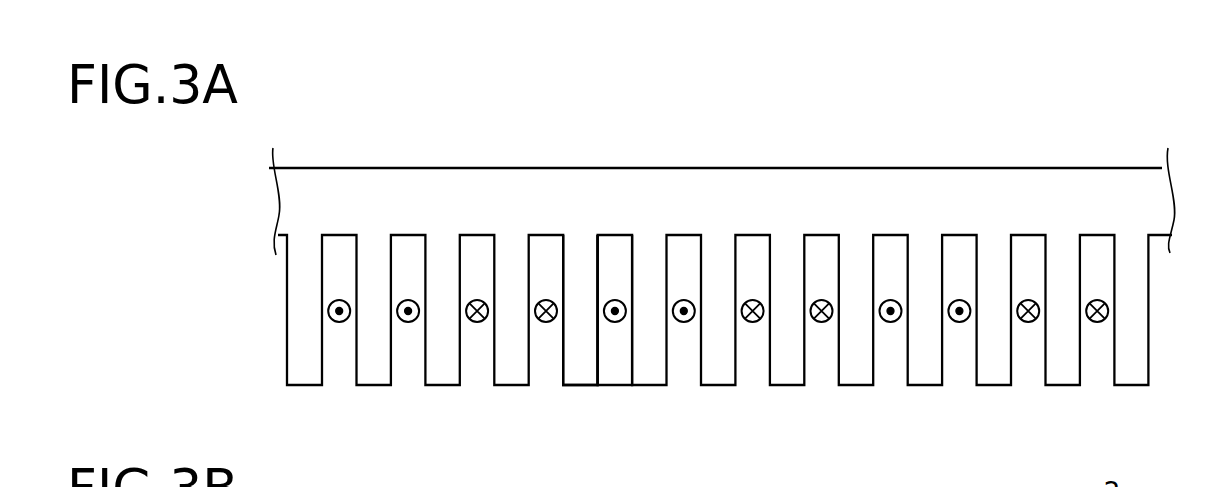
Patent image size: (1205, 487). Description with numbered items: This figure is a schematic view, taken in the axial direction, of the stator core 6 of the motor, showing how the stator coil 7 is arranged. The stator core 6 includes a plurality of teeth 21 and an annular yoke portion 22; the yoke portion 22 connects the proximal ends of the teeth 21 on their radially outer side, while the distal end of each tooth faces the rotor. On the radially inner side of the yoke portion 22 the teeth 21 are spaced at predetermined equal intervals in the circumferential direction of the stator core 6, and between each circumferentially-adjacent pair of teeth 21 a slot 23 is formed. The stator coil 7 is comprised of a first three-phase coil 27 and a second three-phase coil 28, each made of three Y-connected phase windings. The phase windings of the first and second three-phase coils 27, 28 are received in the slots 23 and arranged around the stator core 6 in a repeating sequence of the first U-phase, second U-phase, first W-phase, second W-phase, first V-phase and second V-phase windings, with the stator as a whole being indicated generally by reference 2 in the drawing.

The stator 2 is at (1126, 146).
The stator core 6 is at (1026, 190).
The stator coil 7 is at (375, 372).
The teeth 21 is at (583, 372).
The yoke portion 22 is at (570, 208).
The slot 23 is at (615, 372).
The first three-phase coil 27 is at (341, 325).
The second three-phase coil 28 is at (408, 325).